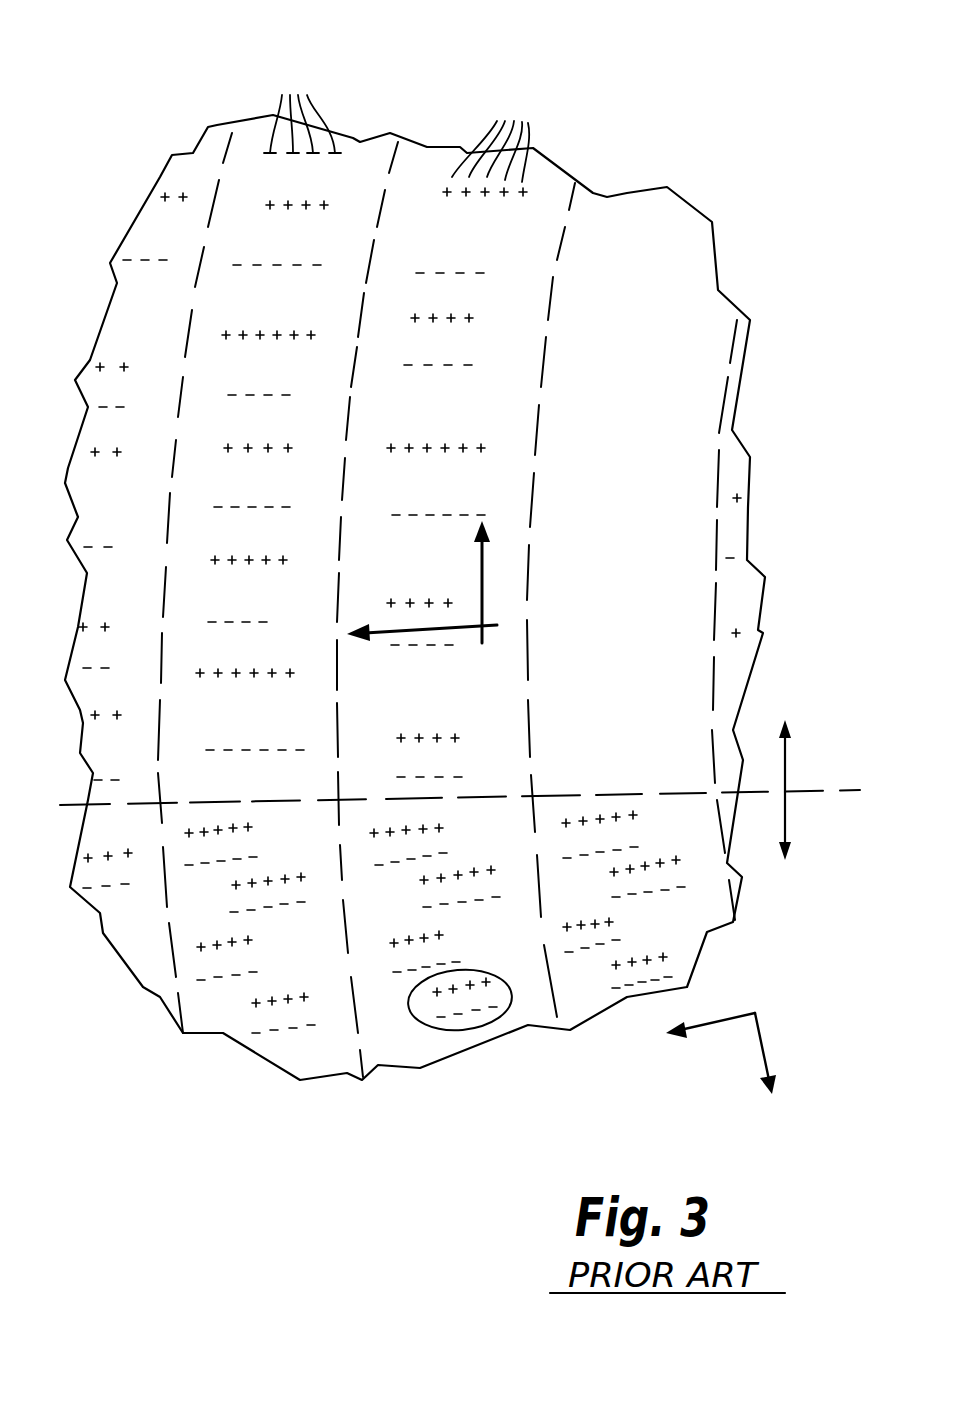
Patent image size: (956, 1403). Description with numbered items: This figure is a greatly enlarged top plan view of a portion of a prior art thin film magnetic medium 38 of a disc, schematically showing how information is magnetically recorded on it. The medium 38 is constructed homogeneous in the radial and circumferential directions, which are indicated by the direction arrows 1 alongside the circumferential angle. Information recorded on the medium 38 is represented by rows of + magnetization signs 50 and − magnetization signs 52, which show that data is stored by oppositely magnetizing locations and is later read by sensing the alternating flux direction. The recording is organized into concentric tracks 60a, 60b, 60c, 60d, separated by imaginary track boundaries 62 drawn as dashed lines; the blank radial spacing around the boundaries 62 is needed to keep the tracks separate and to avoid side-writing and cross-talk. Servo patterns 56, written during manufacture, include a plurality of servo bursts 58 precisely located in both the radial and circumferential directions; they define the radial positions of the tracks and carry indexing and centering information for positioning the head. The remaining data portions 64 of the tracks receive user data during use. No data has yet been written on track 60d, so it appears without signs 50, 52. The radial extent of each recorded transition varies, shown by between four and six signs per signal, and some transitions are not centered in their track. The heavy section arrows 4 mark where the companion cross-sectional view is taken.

The magnetic medium 38 is at (200, 111).
The + magnetization sign 50 is at (490, 142).
The − magnetization sign 52 is at (302, 107).
The servo pattern 56 is at (804, 826).
The servo burst 58 is at (455, 1031).
The track 60a is at (185, 150).
The track 60b is at (350, 137).
The track 60c is at (432, 153).
The track 60d is at (662, 208).
The track boundary 62 is at (223, 147).
The data portion 64 is at (804, 756).
The section line for FIG. 4 is at (431, 602).
The axis direction 1 is at (721, 985).